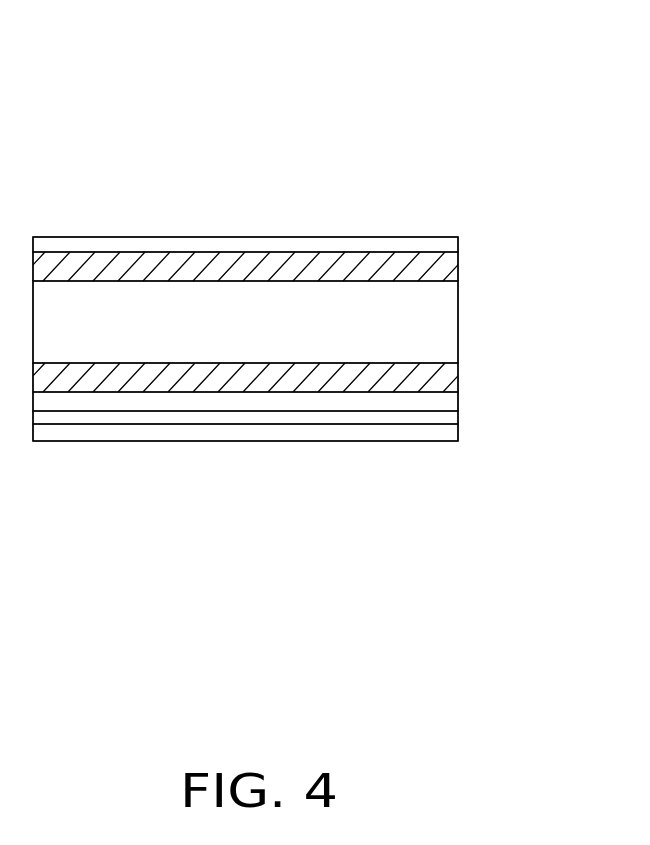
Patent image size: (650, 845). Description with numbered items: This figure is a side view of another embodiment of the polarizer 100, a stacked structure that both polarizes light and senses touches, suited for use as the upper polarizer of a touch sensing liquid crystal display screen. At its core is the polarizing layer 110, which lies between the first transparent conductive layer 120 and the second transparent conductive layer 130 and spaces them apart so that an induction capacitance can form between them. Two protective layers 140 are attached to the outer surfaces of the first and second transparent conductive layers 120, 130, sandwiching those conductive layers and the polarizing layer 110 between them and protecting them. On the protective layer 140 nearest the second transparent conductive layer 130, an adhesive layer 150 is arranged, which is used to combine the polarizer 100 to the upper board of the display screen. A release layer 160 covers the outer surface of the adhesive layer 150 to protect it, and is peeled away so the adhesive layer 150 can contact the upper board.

The polarizer 100 is at (247, 58).
The polarizing layer 110 is at (443, 328).
The first transparent conductive layer 120 is at (443, 265).
The second transparent conductive layer 130 is at (443, 377).
The protective layer 140 is at (389, 237).
The adhesive layer 150 is at (453, 418).
The release layer 160 is at (453, 436).